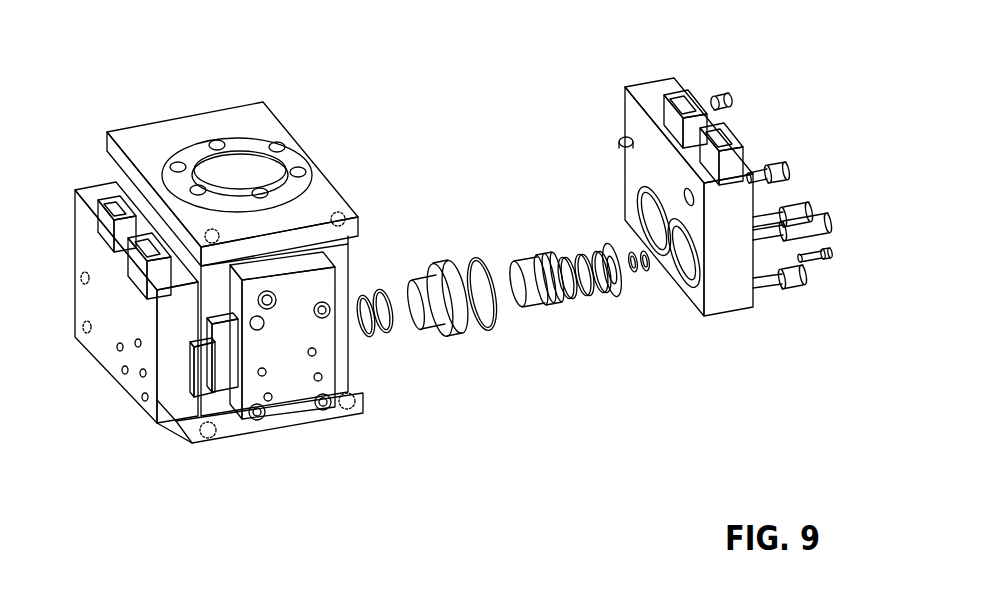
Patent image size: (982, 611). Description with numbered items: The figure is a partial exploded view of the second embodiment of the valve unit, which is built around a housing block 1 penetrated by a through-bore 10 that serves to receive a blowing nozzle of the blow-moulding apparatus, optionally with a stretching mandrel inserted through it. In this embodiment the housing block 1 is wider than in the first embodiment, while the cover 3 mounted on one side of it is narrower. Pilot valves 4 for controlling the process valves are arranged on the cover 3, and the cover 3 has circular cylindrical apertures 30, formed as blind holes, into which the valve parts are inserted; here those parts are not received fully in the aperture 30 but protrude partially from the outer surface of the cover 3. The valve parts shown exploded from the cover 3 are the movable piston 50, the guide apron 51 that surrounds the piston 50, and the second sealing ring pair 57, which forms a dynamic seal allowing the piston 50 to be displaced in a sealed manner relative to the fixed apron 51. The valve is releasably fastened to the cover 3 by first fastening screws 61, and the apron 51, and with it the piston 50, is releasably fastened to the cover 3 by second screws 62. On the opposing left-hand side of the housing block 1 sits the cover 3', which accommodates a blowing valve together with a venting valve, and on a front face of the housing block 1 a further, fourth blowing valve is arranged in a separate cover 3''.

The housing block 1 is at (230, 120).
The through-bore 10 is at (252, 173).
The cover 3 is at (686, 228).
The cover 3' is at (156, 355).
The separate cover 3'' is at (282, 380).
The pilot valves 4 is at (106, 208).
The circular cylindrical apertures 30 is at (650, 212).
The piston 50 is at (540, 300).
The guide apron 51 is at (438, 328).
The second sealing ring pair 57 is at (372, 340).
The first fastening screws 61 is at (790, 170).
The second screws 62 is at (828, 262).